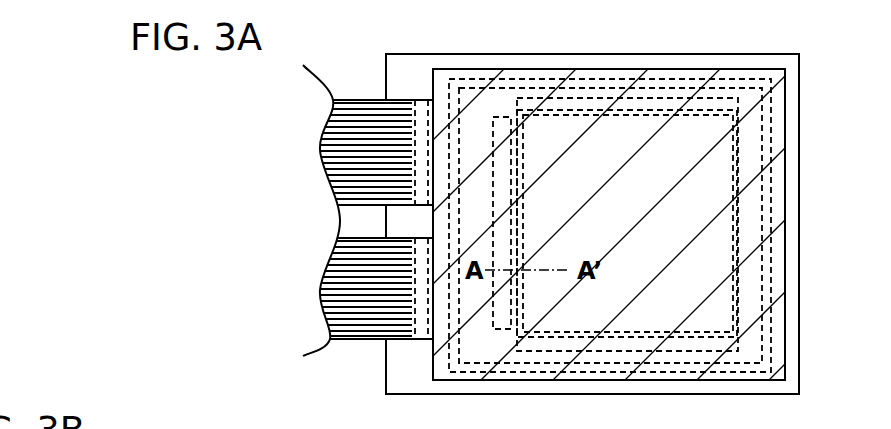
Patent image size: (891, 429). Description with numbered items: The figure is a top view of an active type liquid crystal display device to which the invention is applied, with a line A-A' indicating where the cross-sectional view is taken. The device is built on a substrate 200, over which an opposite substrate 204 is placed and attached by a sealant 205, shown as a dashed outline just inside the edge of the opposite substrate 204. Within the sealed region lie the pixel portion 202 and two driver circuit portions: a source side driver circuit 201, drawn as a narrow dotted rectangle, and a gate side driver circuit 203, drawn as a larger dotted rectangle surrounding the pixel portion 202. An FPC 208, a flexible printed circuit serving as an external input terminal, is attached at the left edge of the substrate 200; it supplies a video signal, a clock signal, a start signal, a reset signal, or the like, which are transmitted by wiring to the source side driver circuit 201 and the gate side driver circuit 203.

The substrate 200 is at (388, 78).
The driver circuit portion (source side driver circuit) 201 is at (498, 326).
The pixel portion 202 is at (728, 313).
The driver circuit portion (gate side driver circuit) 203 is at (612, 98).
The opposite substrate 204 is at (442, 77).
The sealant 205 is at (768, 125).
The FPC (flexible printed circuit) 208 is at (350, 339).